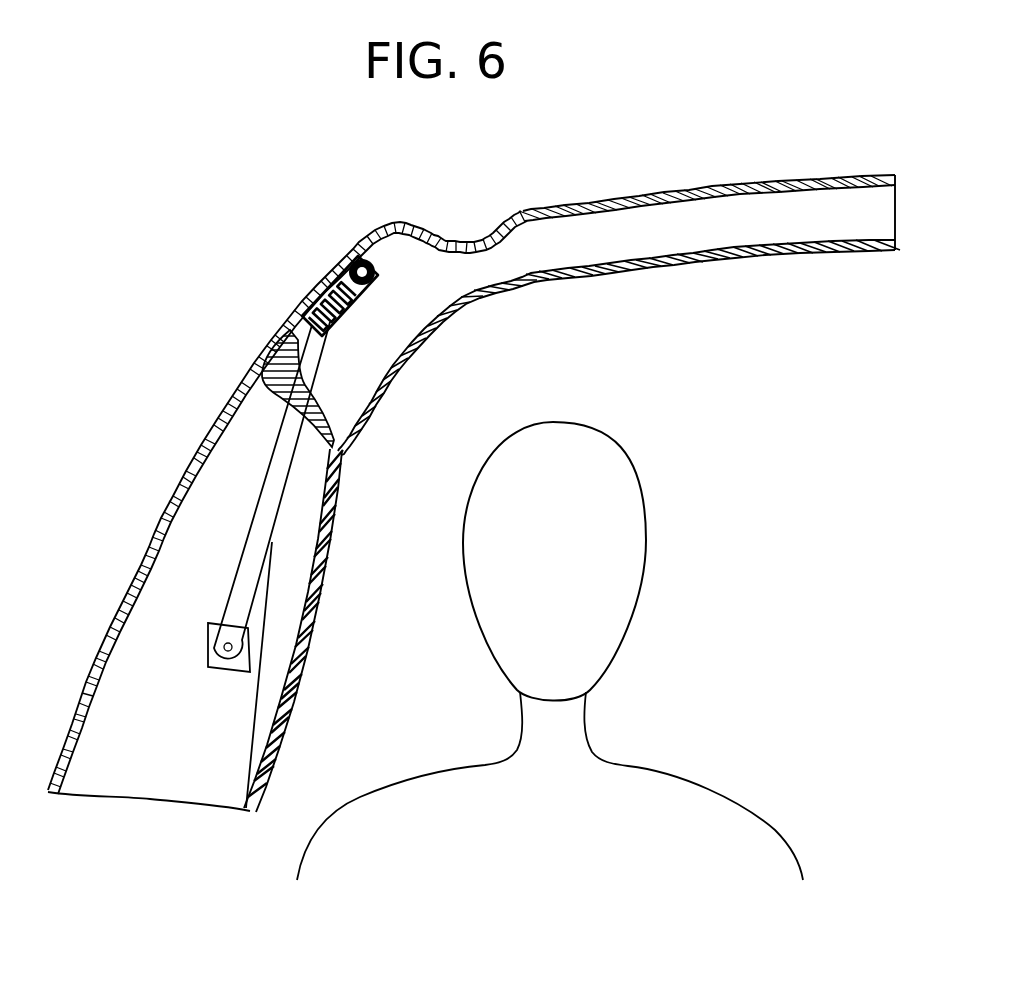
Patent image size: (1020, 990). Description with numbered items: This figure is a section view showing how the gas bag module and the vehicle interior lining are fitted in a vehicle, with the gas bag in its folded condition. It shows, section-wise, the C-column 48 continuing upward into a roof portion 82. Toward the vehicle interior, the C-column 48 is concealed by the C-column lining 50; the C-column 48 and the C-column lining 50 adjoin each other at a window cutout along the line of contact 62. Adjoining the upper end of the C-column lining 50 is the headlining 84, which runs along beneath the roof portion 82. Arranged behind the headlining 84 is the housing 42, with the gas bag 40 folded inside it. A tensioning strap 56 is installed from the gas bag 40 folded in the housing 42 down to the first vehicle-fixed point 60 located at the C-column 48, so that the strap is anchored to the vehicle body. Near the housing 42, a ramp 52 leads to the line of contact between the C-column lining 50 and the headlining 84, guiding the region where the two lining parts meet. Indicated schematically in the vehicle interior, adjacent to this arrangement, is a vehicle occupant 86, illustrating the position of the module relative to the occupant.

The gas bag 40 is at (331, 278).
The housing 42 is at (378, 232).
The C-column 48 is at (197, 450).
The C-column lining 50 is at (300, 670).
The ramp 52 is at (281, 355).
The tensioning strap 56 is at (242, 564).
The first vehicle-fixed point 60 is at (231, 672).
The line of contact 62 is at (270, 561).
The roof portion 82 is at (729, 184).
The headlining 84 is at (756, 256).
The vehicle occupant 86 is at (682, 804).